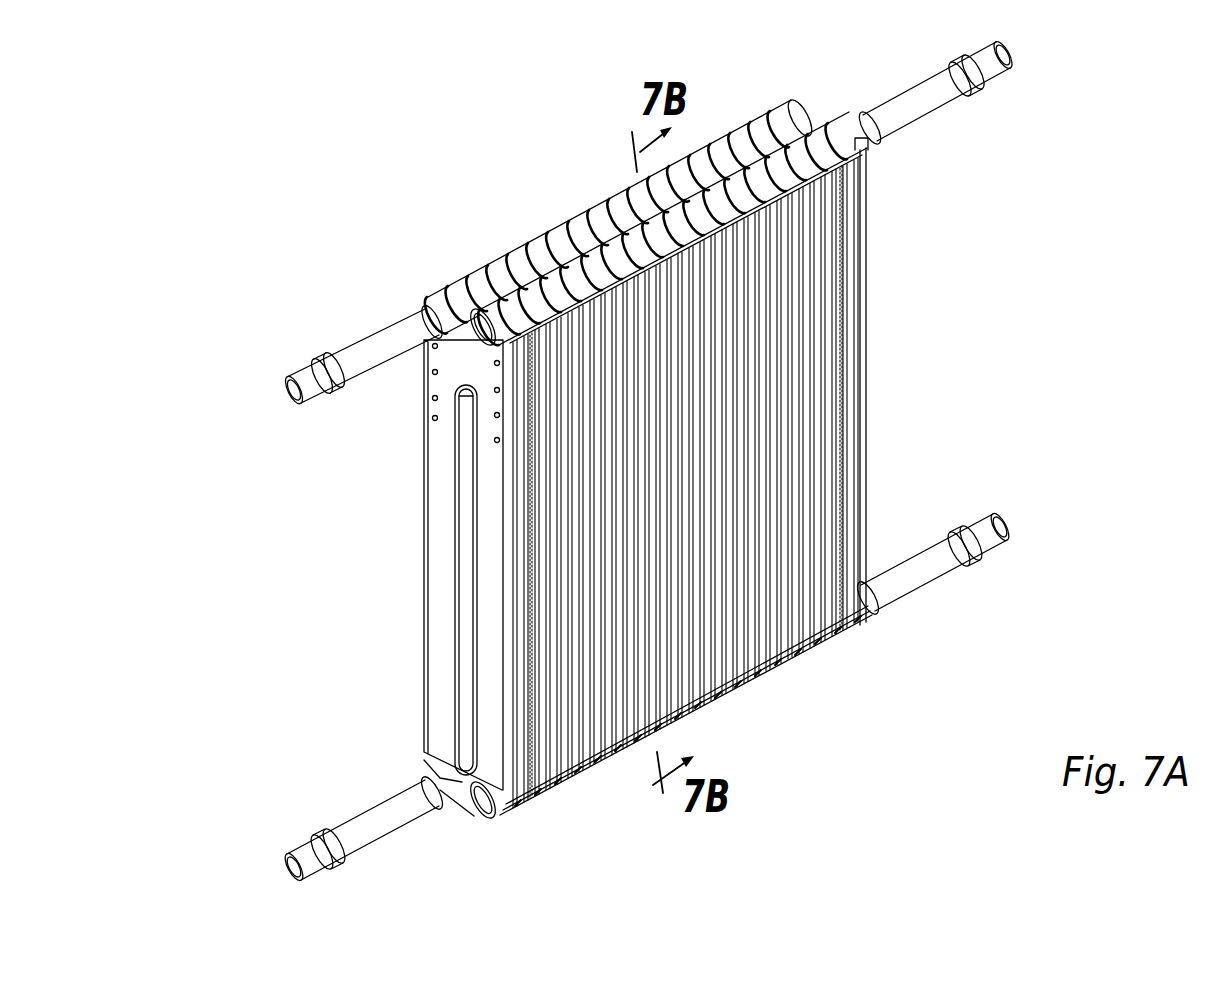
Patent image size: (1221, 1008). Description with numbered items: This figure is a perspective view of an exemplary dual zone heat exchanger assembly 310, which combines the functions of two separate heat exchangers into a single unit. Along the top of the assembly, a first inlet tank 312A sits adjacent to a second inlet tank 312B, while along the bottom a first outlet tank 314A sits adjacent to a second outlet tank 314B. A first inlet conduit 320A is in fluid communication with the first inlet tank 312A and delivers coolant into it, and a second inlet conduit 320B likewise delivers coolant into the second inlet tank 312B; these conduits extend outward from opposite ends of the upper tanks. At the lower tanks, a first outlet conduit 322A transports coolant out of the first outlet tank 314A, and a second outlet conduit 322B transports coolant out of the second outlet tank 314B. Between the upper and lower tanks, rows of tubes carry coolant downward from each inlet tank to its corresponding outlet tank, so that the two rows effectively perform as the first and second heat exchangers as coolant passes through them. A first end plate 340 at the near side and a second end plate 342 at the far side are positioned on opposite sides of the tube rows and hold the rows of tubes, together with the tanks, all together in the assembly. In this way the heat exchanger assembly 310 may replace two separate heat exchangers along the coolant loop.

The heat exchanger assembly 310 is at (410, 160).
The first inlet tank 312A is at (834, 122).
The second inlet tank 312B is at (782, 128).
The first outlet tank 314A is at (795, 658).
The second outlet tank 314B is at (420, 768).
The first inlet conduit 320A is at (1000, 53).
The second inlet conduit 320B is at (313, 366).
The first outlet conduit 322A is at (990, 537).
The second outlet conduit 322B is at (305, 845).
The first end plate 340 is at (440, 497).
The second end plate 342 is at (868, 345).